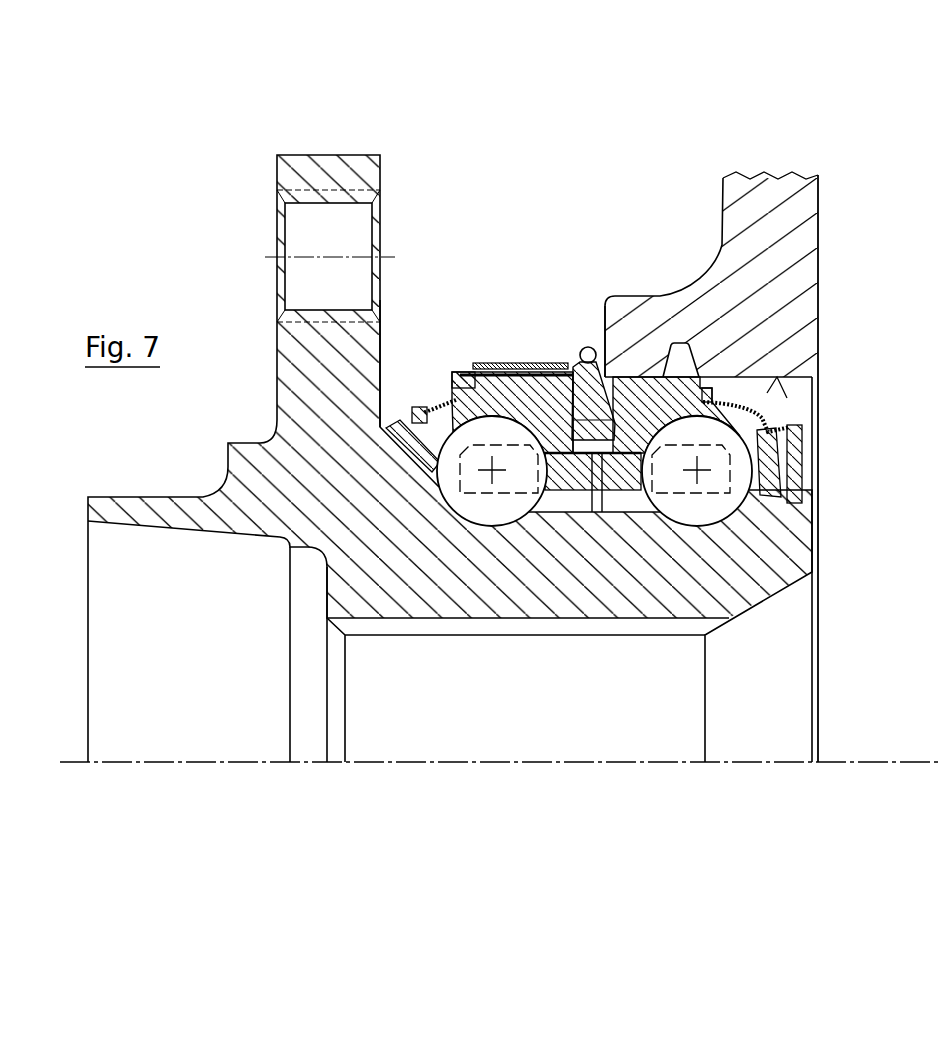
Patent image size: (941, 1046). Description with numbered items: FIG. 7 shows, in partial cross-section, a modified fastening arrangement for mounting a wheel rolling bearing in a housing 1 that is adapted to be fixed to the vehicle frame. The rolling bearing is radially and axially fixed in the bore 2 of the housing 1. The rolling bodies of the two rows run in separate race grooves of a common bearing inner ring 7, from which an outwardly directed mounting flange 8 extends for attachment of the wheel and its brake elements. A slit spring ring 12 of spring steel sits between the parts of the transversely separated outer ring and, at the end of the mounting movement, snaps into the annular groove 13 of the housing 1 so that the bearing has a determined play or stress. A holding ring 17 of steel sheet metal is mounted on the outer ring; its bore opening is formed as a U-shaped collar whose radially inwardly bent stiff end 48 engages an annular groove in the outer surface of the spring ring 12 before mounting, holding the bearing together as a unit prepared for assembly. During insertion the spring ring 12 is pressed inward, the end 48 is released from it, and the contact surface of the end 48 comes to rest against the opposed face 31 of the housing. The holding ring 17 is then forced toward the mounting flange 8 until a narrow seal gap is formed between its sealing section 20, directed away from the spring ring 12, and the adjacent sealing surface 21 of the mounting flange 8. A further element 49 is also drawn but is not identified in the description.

The housing 1 is at (783, 197).
The bore 2 is at (788, 398).
The bearing inner ring 7 is at (775, 537).
The mounting flange 8 is at (298, 172).
The spring ring 12 is at (607, 363).
The annular groove 13 is at (678, 362).
The holding ring 17 is at (552, 363).
The sealing section 20 is at (477, 372).
The sealing surface 21 is at (380, 336).
The opposed face 31 is at (592, 346).
The end 48 is at (585, 347).
The seal 49 is at (457, 363).